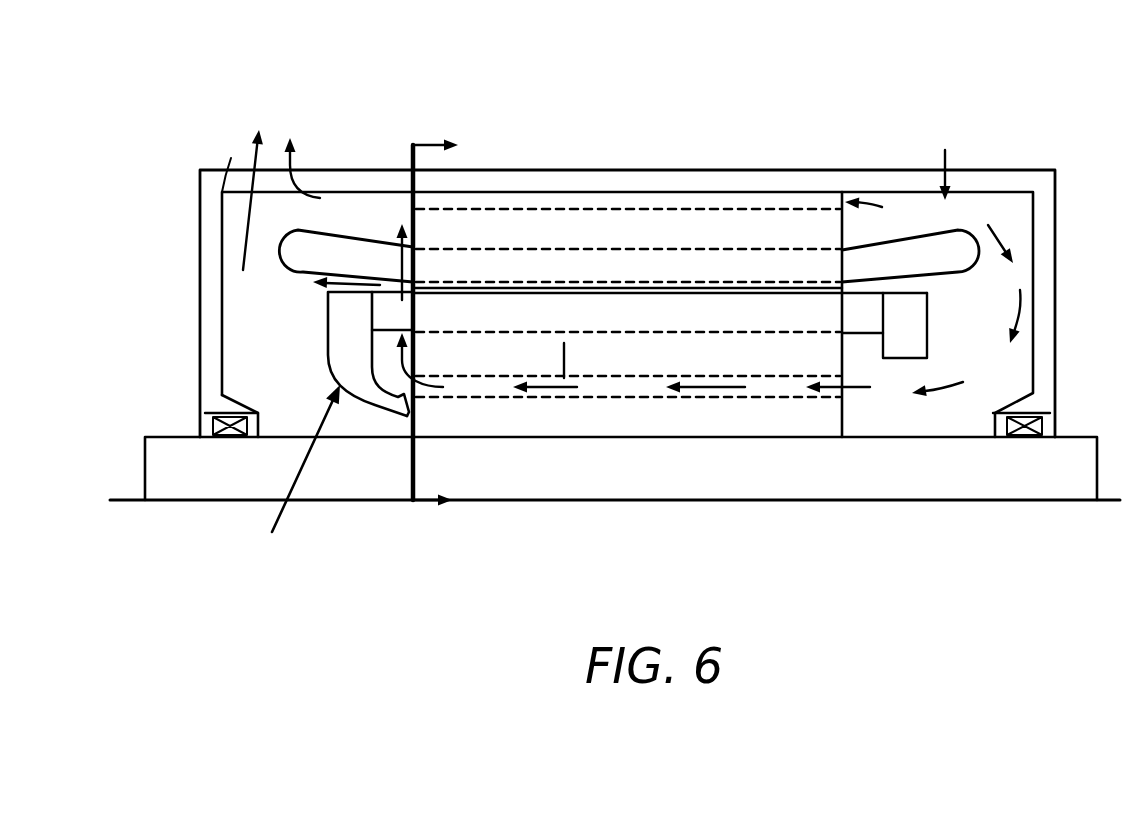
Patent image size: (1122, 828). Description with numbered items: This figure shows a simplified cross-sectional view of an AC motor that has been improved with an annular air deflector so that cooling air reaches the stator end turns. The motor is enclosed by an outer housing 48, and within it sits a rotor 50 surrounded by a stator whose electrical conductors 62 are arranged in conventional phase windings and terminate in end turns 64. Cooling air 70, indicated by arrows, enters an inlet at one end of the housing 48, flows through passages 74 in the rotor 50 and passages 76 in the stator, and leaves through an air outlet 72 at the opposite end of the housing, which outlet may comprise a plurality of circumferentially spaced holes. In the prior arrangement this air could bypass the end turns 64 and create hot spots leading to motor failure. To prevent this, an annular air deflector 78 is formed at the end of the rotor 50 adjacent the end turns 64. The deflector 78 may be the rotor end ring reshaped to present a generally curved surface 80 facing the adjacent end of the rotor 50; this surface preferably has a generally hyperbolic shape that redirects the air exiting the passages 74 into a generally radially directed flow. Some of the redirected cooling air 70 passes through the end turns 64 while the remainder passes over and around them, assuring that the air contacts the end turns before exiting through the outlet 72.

The outer housing 48 is at (478, 182).
The rotor 50 is at (608, 418).
The electrical conductors 62 is at (532, 262).
The end turns 64 is at (297, 257).
The cooling air 70 is at (1020, 305).
The air outlet 72 is at (328, 178).
The passages 74 is at (502, 387).
The passages 76 is at (595, 200).
The annular air deflector 78 is at (366, 383).
The curved surface 80 is at (396, 412).